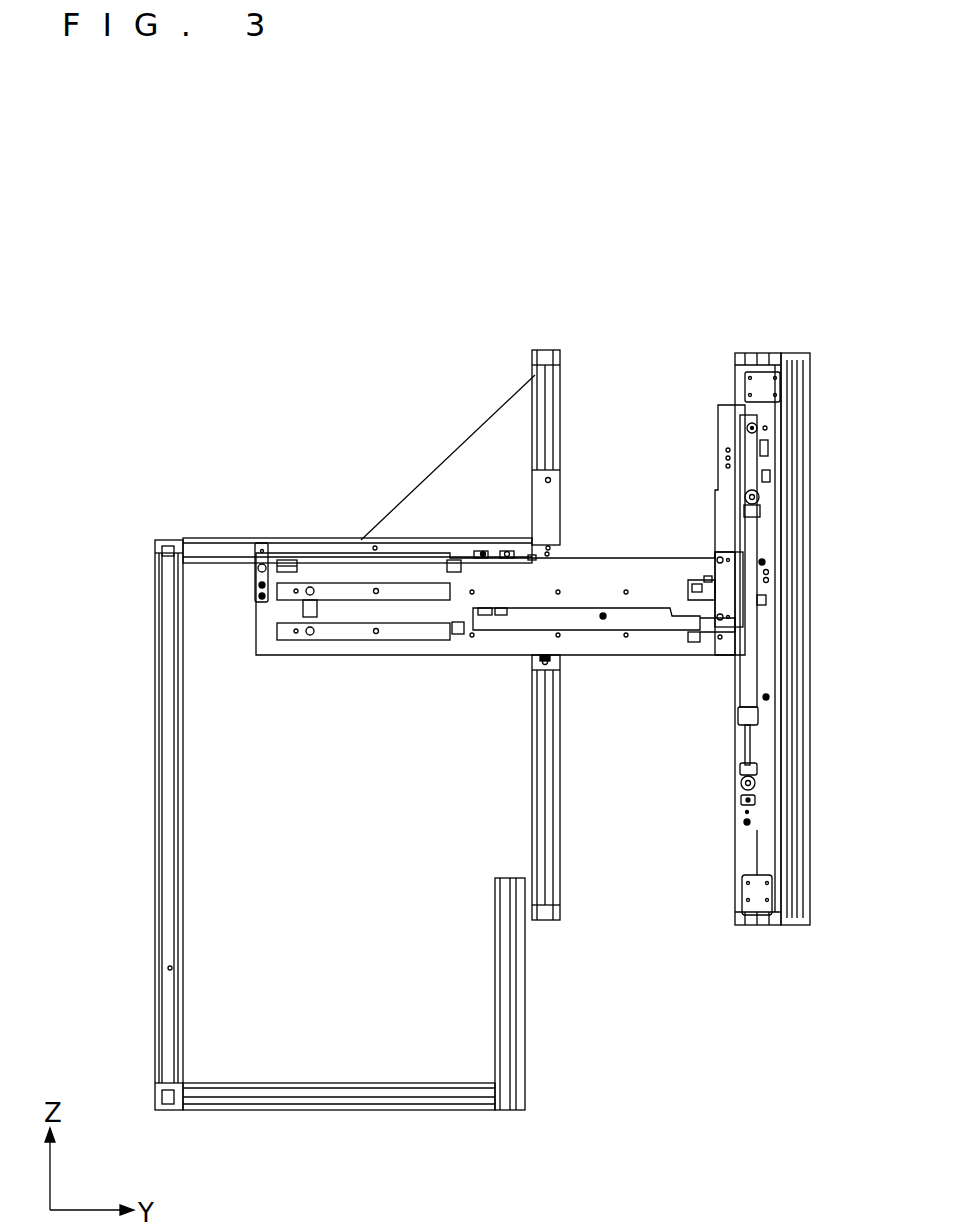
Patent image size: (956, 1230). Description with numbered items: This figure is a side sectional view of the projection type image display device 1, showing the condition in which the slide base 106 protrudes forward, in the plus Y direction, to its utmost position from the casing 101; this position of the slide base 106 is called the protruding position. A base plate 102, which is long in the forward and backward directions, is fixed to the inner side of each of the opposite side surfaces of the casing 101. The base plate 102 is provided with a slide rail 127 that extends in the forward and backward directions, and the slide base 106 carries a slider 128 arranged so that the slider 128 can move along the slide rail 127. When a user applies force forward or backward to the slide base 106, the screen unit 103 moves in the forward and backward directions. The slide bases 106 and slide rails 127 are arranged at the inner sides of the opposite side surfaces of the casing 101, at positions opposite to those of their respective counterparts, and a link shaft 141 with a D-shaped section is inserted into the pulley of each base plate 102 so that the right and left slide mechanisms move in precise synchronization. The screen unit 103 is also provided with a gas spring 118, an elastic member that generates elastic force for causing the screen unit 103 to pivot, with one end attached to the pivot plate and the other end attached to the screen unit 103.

The projection type image display device 1 is at (198, 462).
The casing 101 is at (180, 540).
The base plate 102 is at (262, 613).
The screen unit 103 is at (748, 353).
The slide base 106 is at (483, 657).
The gas spring 118 is at (748, 680).
The slide rail 127 is at (276, 628).
The slider 128 is at (463, 636).
The link shaft 141 is at (262, 560).